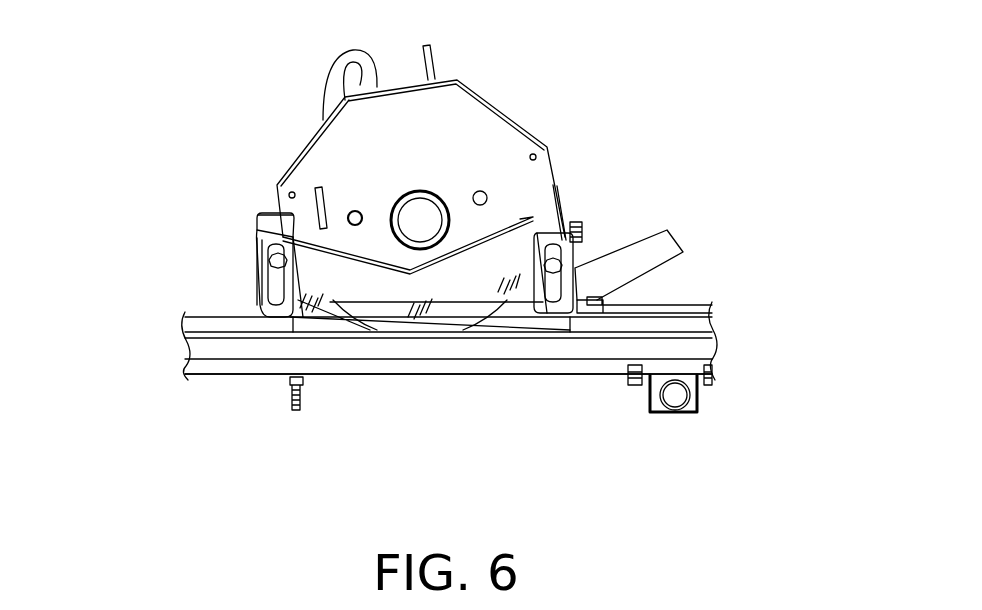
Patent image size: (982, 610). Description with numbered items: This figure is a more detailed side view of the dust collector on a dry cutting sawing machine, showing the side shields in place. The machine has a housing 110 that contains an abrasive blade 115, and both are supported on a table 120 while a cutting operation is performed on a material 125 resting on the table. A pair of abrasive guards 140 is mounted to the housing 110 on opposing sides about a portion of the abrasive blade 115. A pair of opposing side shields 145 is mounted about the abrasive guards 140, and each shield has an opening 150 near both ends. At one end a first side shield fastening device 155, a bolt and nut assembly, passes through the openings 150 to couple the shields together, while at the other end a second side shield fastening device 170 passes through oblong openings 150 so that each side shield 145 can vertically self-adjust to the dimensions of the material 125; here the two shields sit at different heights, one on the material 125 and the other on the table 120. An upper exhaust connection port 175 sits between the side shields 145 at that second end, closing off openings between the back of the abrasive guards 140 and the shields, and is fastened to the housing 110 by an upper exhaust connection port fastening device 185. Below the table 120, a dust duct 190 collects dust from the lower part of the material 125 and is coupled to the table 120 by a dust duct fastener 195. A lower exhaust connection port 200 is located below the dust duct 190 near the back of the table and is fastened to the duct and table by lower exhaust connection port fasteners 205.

The housing 110 is at (483, 98).
The abrasive blade 115 is at (450, 313).
The table 120 is at (205, 350).
The material 125 is at (205, 320).
The abrasive guard 140 is at (358, 287).
The side shield 145 is at (263, 213).
The opening 150 is at (277, 293).
The first side shield fastening device 155 is at (257, 242).
The second side shield fastening device 170 is at (574, 258).
The upper exhaust connection port 175 is at (672, 255).
The upper exhaust connection port fastening device 185 is at (578, 222).
The dust duct 190 is at (230, 367).
The dust duct fastener 195 is at (295, 410).
The lower exhaust connection port 200 is at (680, 410).
The lower exhaust connection port fastener 205 is at (635, 385).